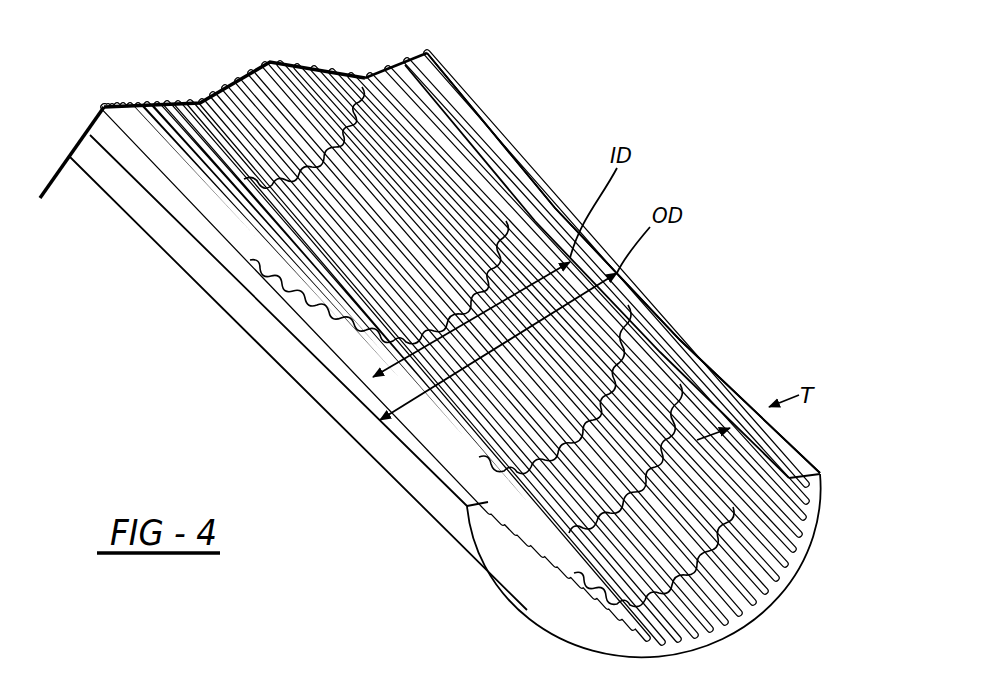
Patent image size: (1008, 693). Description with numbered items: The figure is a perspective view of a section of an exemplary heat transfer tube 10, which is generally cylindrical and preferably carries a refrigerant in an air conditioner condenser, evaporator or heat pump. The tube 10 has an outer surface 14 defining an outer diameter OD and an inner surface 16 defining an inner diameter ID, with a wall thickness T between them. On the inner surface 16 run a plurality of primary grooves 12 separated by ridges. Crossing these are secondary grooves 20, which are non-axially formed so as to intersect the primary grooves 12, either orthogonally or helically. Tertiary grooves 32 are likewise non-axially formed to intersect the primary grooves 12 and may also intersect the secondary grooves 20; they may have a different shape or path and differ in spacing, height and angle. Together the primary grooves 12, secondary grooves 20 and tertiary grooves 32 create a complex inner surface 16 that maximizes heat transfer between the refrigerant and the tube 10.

The tube 10 is at (742, 221).
The primary grooves 12 is at (757, 567).
The outer surface 14 is at (408, 468).
The inner surface 16 is at (670, 580).
The secondary grooves 20 is at (432, 183).
The tertiary grooves 32 is at (378, 138).